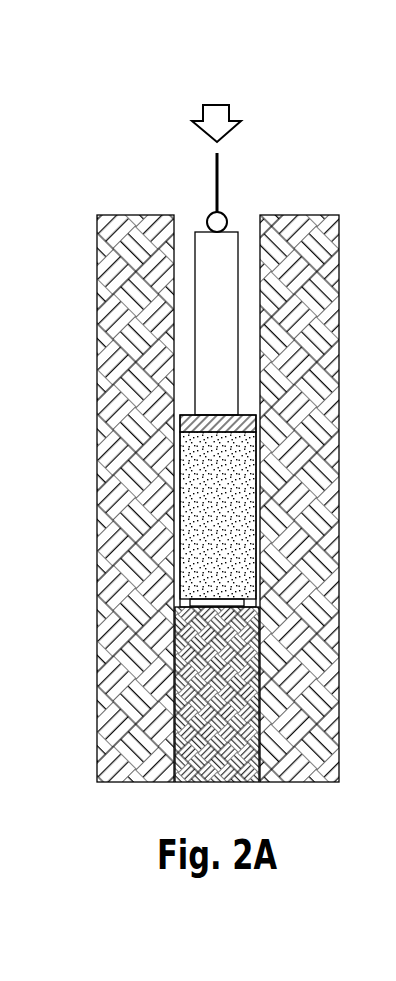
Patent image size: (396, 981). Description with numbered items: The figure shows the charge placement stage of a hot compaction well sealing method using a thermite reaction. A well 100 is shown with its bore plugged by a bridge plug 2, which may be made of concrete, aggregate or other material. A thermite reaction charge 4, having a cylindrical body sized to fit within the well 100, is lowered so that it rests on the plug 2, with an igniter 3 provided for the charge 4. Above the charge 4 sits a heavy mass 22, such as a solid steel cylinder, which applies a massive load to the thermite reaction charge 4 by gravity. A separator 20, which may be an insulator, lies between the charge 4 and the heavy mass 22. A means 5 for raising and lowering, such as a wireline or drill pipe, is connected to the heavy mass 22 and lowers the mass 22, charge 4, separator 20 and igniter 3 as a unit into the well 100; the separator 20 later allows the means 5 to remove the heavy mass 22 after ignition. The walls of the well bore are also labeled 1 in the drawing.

The well 100 is at (286, 201).
The die wall 1 is at (98, 497).
The bridge plug 2 is at (218, 783).
The igniter 3 is at (190, 601).
The thermite reaction charge 4 is at (200, 508).
The means for raising and lowering 5 is at (213, 163).
The separator 20 is at (180, 412).
The heavy mass 22 is at (237, 232).